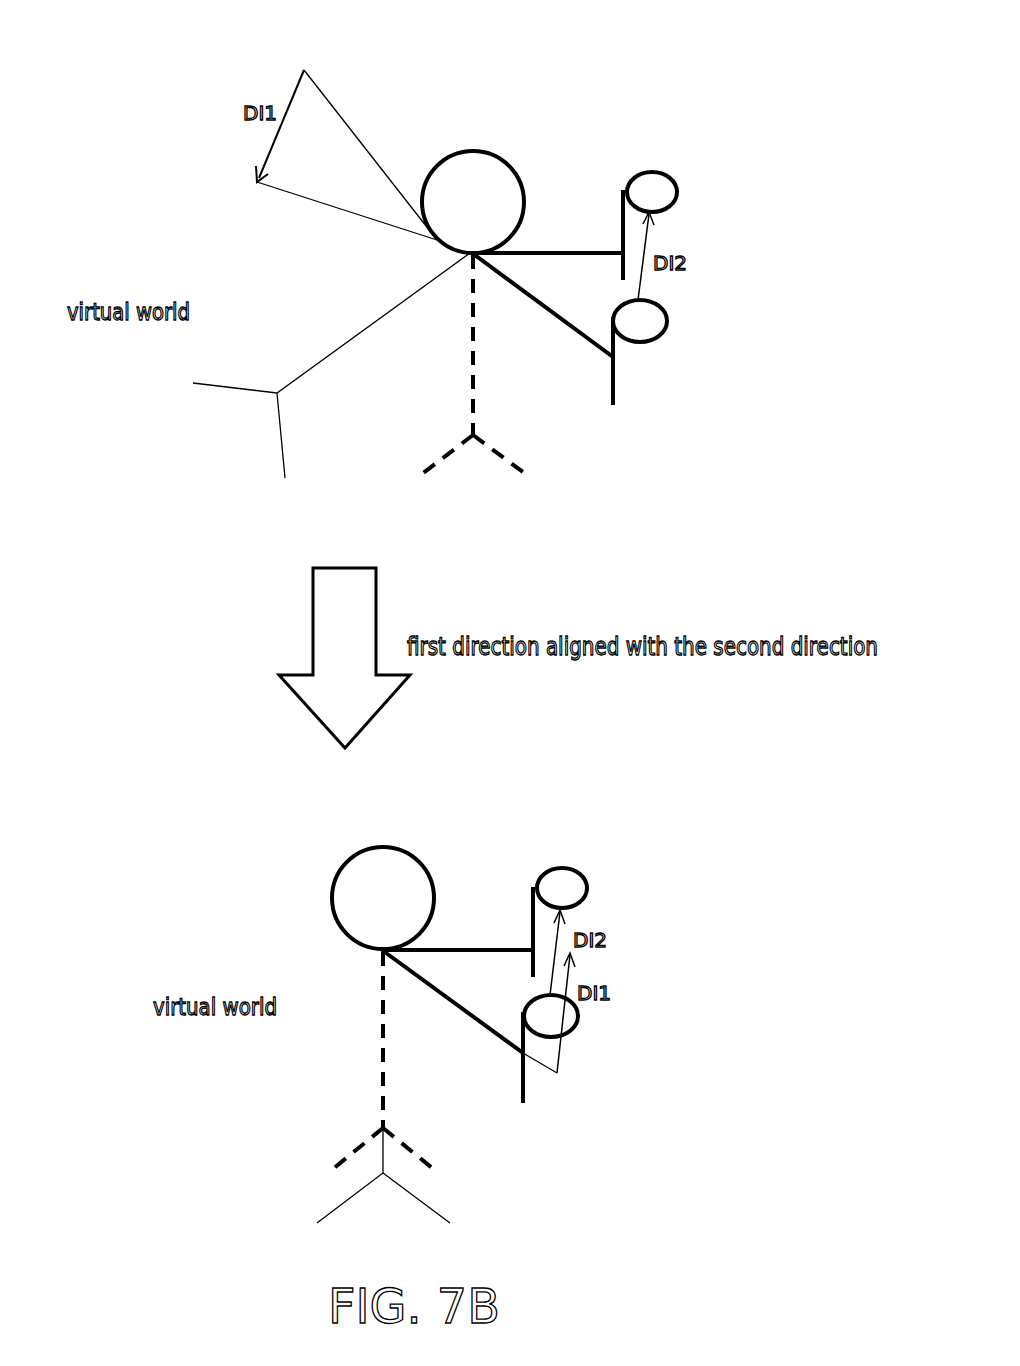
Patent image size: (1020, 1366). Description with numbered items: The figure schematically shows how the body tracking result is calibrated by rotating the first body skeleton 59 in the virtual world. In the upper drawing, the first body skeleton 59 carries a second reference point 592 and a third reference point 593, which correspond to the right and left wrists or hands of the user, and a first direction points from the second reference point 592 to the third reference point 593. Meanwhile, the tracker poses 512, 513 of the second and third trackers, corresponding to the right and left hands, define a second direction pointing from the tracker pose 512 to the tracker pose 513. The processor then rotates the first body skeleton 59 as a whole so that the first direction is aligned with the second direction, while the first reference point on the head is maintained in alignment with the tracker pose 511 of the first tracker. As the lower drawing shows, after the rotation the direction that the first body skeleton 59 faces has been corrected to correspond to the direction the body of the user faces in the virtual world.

The first body skeleton 59 is at (313, 310).
The tracker pose 511 is at (393, 875).
The tracker pose 512 is at (667, 320).
The tracker pose 513 is at (677, 193).
The second reference point 592 is at (304, 70).
The third reference point 593 is at (257, 182).